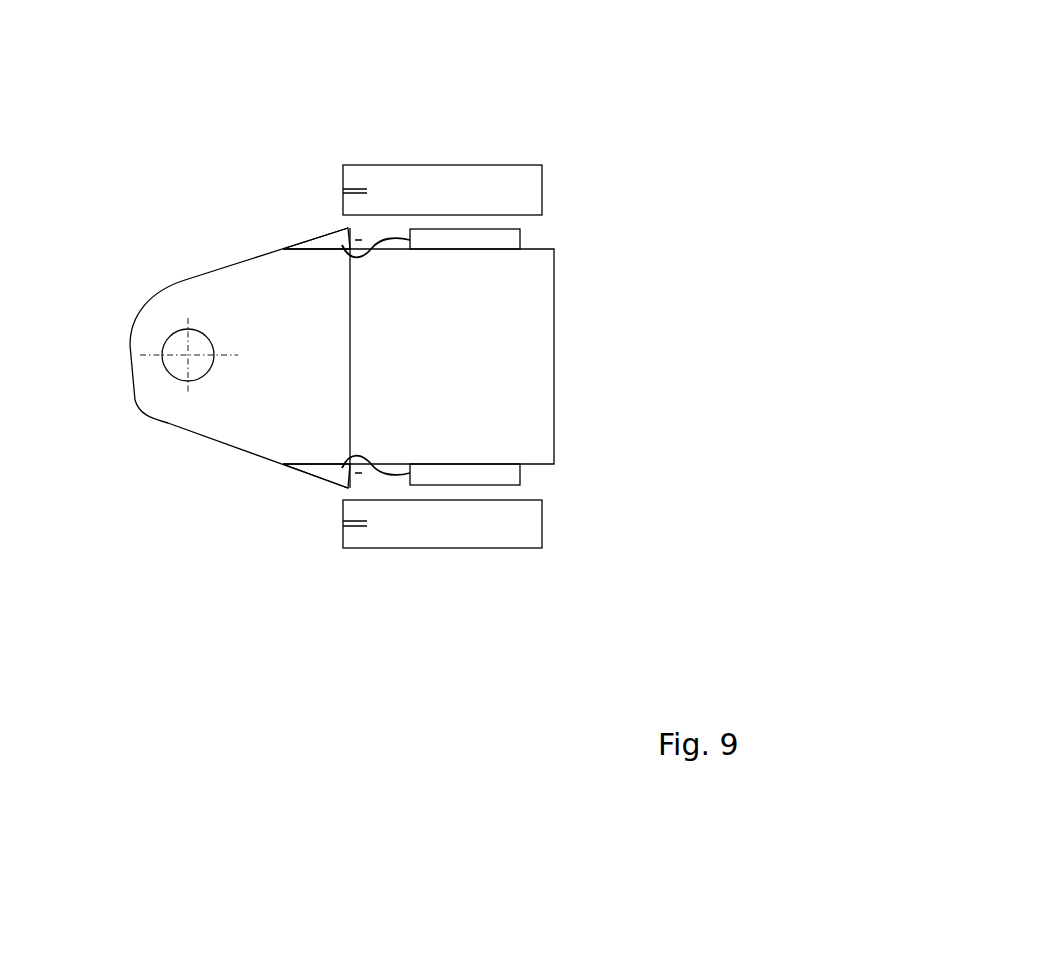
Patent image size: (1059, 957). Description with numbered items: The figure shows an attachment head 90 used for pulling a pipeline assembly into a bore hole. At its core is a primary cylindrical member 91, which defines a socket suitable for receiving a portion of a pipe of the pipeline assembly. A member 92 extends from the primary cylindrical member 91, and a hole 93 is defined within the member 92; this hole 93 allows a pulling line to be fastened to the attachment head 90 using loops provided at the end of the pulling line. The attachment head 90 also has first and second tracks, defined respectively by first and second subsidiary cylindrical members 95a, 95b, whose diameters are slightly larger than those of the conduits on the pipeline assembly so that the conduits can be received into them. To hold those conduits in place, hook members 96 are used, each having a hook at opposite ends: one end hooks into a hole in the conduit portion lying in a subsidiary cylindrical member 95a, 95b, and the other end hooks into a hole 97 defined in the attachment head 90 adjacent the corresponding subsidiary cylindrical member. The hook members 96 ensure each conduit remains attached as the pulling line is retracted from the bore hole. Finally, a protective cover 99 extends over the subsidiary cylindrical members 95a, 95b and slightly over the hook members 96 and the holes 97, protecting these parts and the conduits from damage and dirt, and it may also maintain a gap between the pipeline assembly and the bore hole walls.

The attachment head 90 is at (620, 138).
The primary cylindrical member 91 is at (467, 371).
The member 92 is at (217, 287).
The hole 93 is at (172, 362).
The first subsidiary cylindrical member 95a is at (513, 238).
The second subsidiary cylindrical member 95b is at (513, 473).
The hook member 96 is at (385, 233).
The hole 97 is at (347, 240).
The protective cover 99 is at (473, 175).